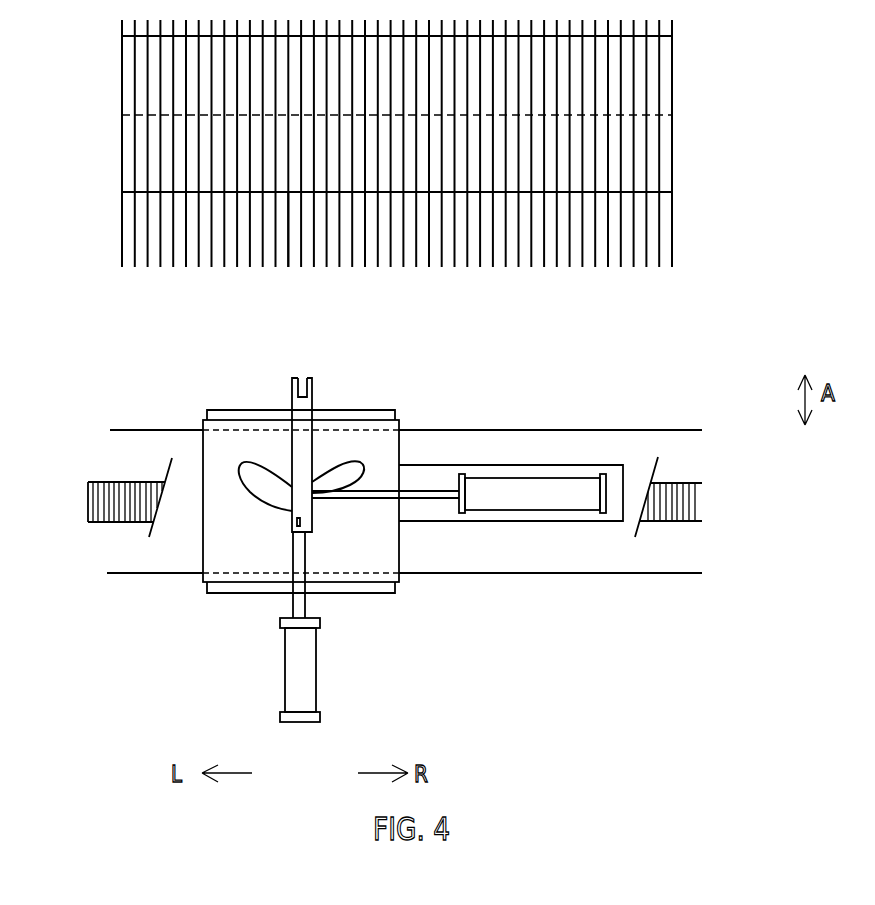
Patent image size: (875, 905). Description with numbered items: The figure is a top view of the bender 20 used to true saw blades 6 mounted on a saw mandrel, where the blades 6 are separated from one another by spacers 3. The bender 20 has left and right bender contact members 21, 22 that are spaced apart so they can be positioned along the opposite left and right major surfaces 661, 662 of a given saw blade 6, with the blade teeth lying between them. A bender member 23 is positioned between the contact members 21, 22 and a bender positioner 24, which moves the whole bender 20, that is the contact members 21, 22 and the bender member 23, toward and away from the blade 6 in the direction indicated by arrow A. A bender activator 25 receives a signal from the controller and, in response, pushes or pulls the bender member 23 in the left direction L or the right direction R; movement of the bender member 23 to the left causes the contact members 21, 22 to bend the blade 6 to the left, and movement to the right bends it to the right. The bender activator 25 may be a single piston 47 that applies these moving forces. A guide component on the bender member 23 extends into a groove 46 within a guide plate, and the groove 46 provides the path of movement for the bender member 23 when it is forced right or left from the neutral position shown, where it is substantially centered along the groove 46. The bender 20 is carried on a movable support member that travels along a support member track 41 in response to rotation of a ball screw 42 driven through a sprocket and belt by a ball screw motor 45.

The spacers 3 is at (576, 167).
The saw blades 6 is at (544, 267).
The left major surface 661 is at (288, 254).
The right major surface 662 is at (290, 230).
The bender 20 is at (413, 643).
The left bender contact member 21 is at (292, 388).
The right bender contact member 22 is at (312, 388).
The bender member 23 is at (297, 511).
The bender positioner 24 is at (307, 668).
The bender activator 25 is at (425, 495).
The support member track 41 is at (575, 575).
The ball screw 42 is at (133, 497).
The ball screw motor 45 is at (220, 530).
The groove 46 is at (243, 463).
The piston 47 is at (585, 495).